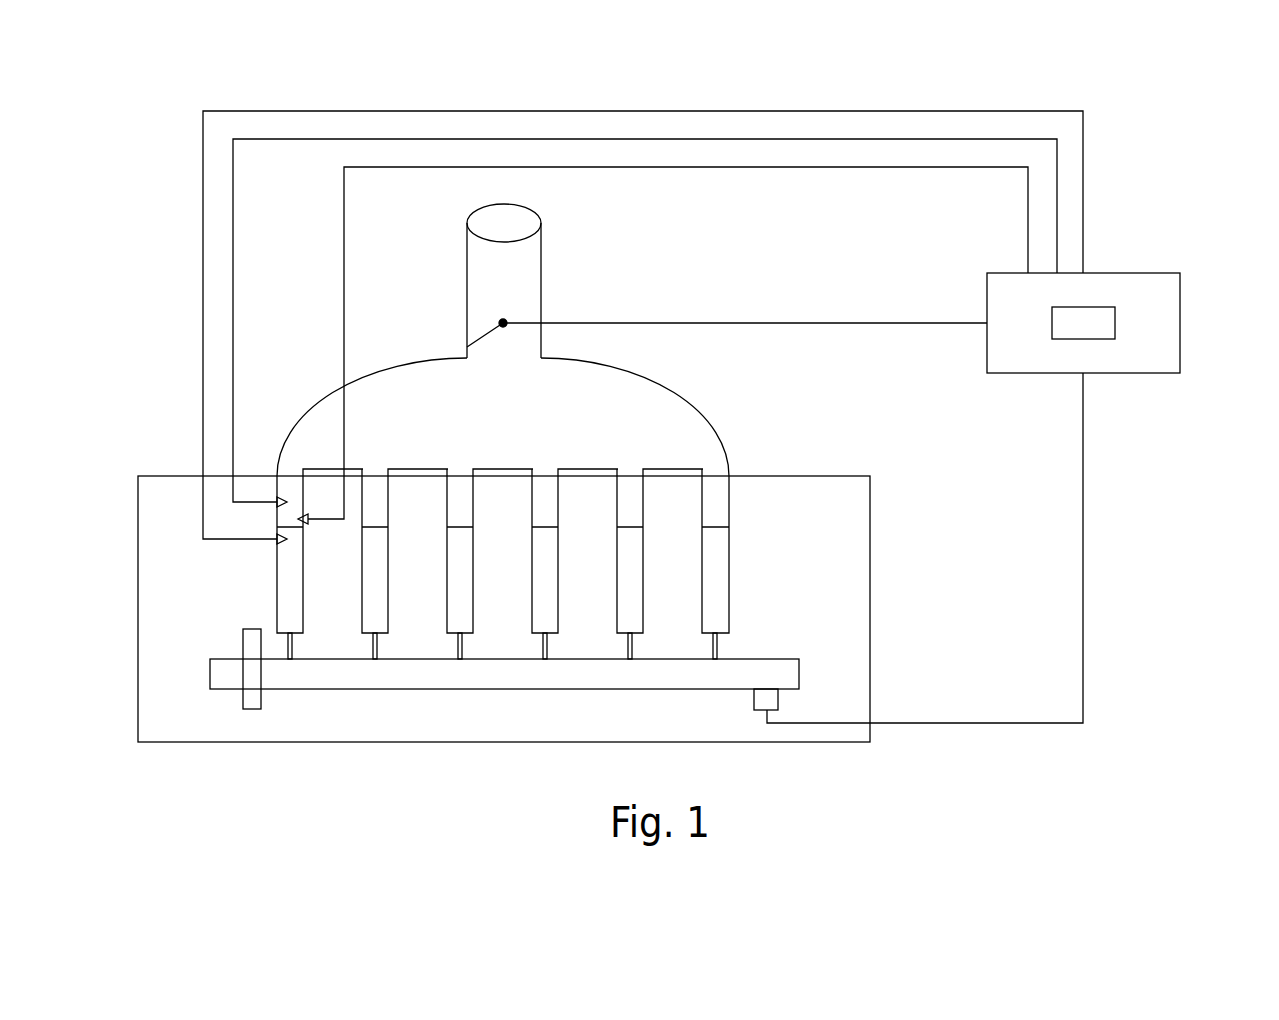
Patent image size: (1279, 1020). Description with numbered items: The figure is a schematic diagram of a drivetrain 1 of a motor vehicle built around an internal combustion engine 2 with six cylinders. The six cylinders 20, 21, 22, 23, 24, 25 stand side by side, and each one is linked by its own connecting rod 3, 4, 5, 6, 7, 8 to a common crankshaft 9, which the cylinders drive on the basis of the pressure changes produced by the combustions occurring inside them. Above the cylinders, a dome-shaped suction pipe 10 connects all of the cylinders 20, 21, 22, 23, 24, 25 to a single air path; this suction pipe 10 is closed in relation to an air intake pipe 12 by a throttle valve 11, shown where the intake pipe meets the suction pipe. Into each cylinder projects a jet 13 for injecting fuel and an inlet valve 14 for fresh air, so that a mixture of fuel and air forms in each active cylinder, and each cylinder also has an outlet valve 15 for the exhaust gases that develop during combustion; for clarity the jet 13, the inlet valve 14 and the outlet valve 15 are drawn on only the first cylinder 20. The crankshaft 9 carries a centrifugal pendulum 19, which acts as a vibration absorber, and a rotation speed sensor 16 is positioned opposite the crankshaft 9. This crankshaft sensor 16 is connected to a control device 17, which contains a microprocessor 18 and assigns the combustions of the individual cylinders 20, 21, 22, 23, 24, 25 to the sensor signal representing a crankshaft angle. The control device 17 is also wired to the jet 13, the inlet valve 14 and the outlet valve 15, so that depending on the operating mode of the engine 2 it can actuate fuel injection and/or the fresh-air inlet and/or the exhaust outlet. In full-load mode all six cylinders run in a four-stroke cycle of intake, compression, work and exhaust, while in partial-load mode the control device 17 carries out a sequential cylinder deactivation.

The drivetrain 1 is at (160, 106).
The internal combustion engine 2 is at (155, 603).
The connecting rod 3 is at (292, 637).
The connecting rod 4 is at (377, 637).
The connecting rod 5 is at (462, 637).
The connecting rod 6 is at (547, 637).
The connecting rod 7 is at (632, 637).
The connecting rod 8 is at (717, 637).
The crankshaft 9 is at (640, 690).
The suction pipe 10 is at (690, 420).
The throttle valve 11 is at (507, 320).
The air intake pipe 12 is at (467, 280).
The jet 13 is at (277, 535).
The inlet valve 14 is at (277, 498).
The outlet valve 15 is at (303, 520).
The rotation speed sensor 16 is at (763, 703).
The control device 17 is at (1157, 317).
The microprocessor 18 is at (1097, 318).
The centrifugal pendulum 19 is at (247, 702).
The cylinder 20 is at (284, 566).
The cylinder 21 is at (369, 566).
The cylinder 22 is at (454, 566).
The cylinder 23 is at (539, 566).
The cylinder 24 is at (624, 566).
The cylinder 25 is at (709, 566).